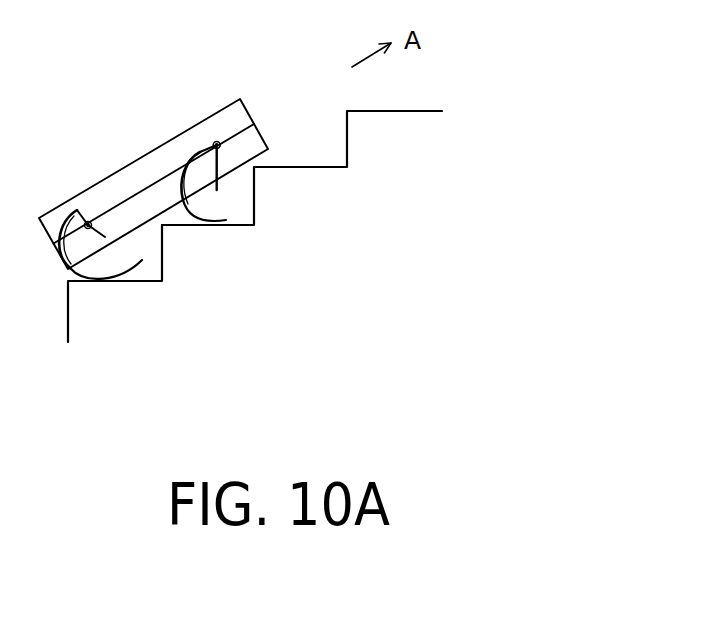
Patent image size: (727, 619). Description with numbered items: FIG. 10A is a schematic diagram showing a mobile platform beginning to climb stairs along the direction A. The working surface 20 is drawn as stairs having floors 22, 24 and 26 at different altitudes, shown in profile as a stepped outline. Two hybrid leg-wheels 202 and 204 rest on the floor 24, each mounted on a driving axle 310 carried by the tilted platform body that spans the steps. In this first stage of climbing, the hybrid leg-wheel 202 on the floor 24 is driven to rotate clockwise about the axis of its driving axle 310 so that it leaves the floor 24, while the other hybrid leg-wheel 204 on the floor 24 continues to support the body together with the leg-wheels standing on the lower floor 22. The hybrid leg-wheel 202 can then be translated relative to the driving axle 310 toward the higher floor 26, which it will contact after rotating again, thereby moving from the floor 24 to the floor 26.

The working surface 20 is at (448, 123).
The floor 22 is at (133, 282).
The floor 24 is at (247, 227).
The floor 26 is at (300, 168).
The hybrid leg-wheel 202 is at (178, 180).
The hybrid leg-wheel 204 is at (220, 214).
The driving axle 310 is at (217, 145).